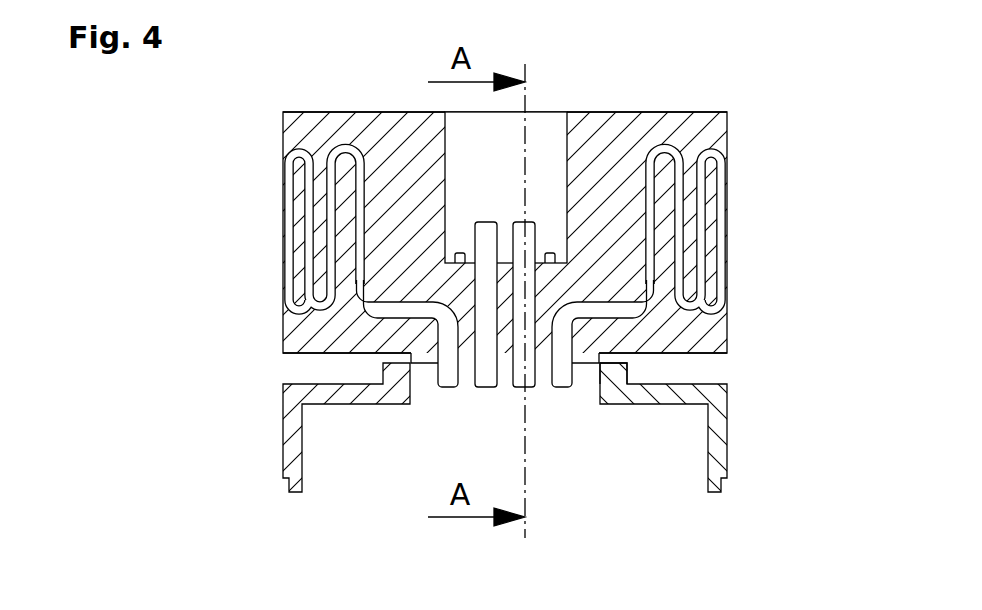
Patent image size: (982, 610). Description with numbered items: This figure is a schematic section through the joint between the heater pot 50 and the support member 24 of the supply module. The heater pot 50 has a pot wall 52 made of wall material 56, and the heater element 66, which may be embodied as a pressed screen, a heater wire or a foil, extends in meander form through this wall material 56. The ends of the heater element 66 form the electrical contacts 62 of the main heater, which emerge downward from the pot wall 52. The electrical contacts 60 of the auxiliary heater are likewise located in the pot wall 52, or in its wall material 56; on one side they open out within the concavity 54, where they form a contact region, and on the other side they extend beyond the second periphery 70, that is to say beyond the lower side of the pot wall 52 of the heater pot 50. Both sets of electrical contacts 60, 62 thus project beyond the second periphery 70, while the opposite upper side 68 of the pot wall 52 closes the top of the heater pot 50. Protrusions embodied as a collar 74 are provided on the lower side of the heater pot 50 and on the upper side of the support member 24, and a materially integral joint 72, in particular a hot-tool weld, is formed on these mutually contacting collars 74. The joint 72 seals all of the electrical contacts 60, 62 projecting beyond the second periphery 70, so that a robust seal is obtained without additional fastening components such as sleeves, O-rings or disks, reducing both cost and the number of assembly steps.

The support member 24 is at (296, 438).
The heater pot 50 is at (503, 238).
The pot wall 52 is at (399, 143).
The concavity 54 is at (537, 135).
The wall material 56 is at (607, 148).
The electrical contacts of the auxiliary heater 60 is at (518, 222).
The electrical contacts of the main heater 62 is at (450, 375).
The heater element 66 is at (330, 213).
The upper side of housing 68 is at (316, 112).
The second periphery 70 is at (312, 353).
The materially integral joint 72 is at (604, 353).
The collar 74 is at (613, 367).